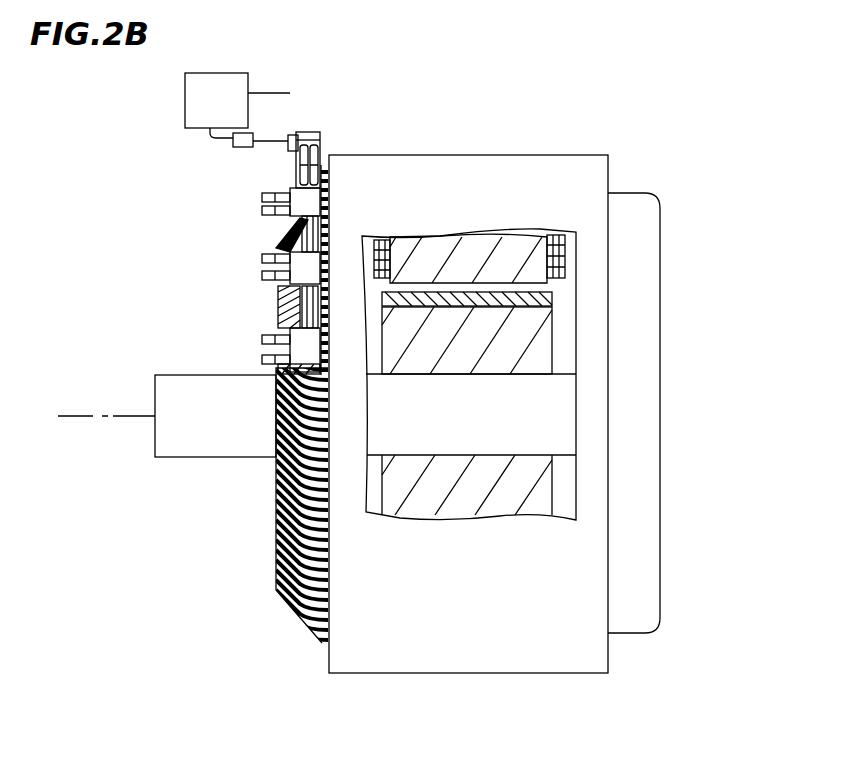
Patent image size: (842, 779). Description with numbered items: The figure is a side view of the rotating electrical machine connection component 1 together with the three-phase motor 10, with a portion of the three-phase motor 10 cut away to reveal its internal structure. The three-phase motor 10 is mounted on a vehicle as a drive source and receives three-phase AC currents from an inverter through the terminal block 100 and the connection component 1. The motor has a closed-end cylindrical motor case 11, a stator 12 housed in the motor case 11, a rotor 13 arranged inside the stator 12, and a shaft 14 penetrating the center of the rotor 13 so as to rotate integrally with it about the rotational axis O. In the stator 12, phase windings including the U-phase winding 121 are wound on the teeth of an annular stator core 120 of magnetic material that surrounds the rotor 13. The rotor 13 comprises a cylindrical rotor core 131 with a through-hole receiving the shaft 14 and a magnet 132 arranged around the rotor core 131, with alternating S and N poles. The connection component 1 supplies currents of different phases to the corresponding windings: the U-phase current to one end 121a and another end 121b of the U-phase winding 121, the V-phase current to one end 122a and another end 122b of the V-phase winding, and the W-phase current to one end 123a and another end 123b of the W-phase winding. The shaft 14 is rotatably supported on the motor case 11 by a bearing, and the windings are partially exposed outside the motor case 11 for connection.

The three-phase motor 10 is at (670, 136).
The motor case 11 is at (462, 155).
The stator 12 is at (443, 240).
The stator core 120 is at (500, 243).
The U-phase winding 121 is at (560, 262).
The rotor 13 is at (731, 268).
The rotor core 131 is at (540, 355).
The magnet 132 is at (548, 298).
The shaft 14 is at (200, 448).
The rotational axis O is at (92, 415).
The terminal block 100 is at (173, 89).
The rotating electrical machine connection component 1 is at (318, 121).
The one end of the U-phase winding 121a is at (262, 360).
The another end of the U-phase winding 121b is at (262, 340).
The one end of the V-phase winding 122a is at (262, 278).
The another end of the V-phase winding 122b is at (262, 258).
The one end of the W-phase winding 123a is at (262, 212).
The another end of the W-phase winding 123b is at (262, 197).